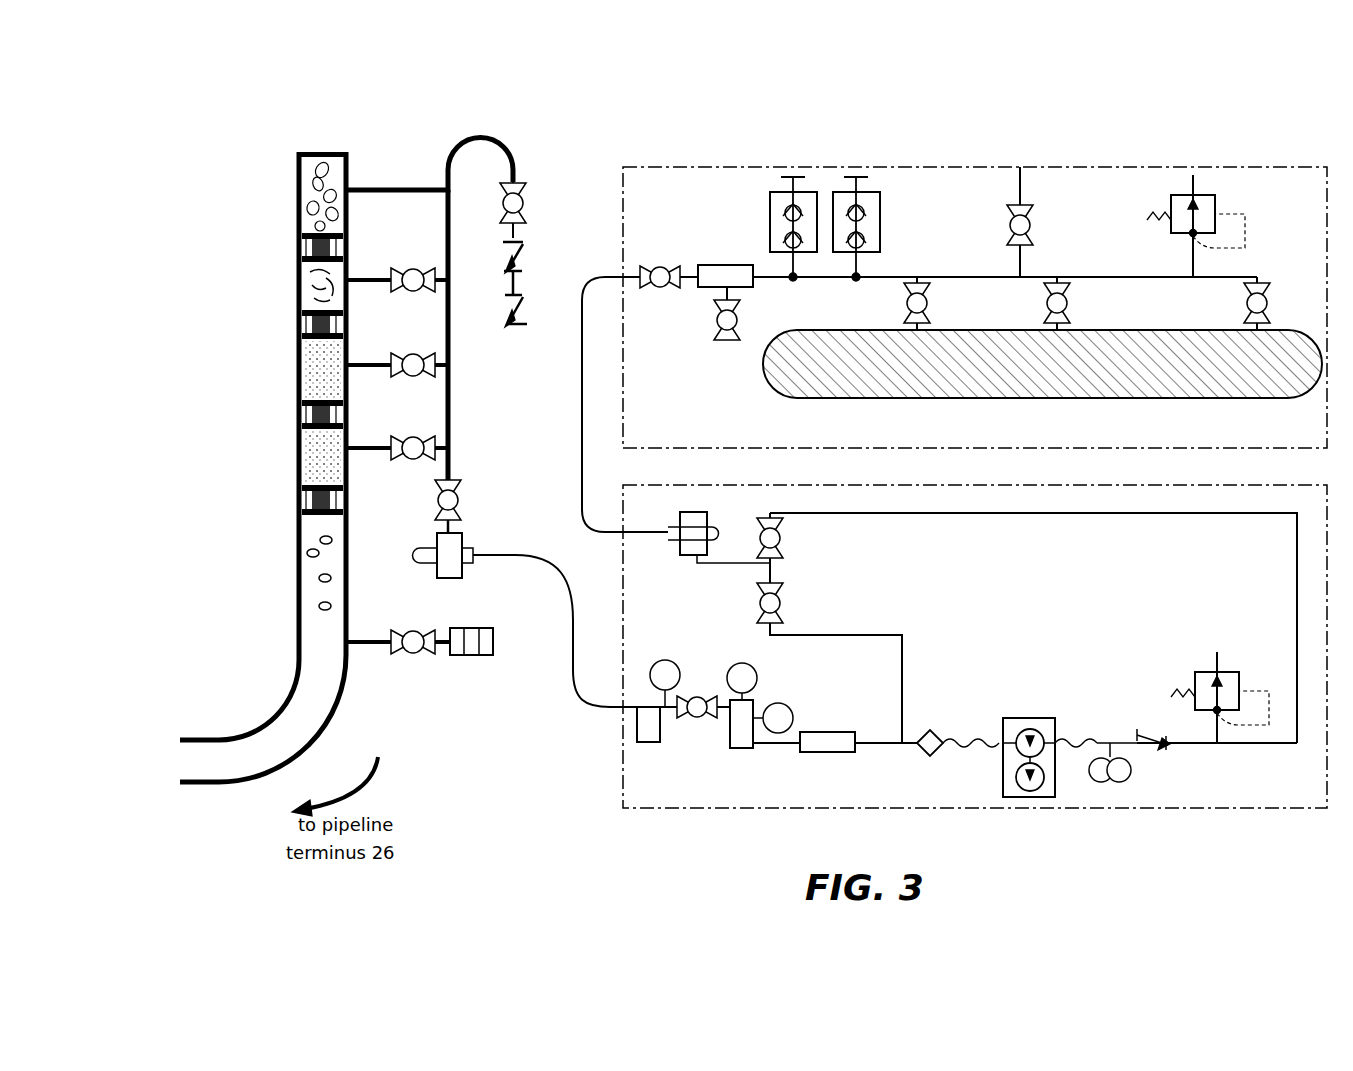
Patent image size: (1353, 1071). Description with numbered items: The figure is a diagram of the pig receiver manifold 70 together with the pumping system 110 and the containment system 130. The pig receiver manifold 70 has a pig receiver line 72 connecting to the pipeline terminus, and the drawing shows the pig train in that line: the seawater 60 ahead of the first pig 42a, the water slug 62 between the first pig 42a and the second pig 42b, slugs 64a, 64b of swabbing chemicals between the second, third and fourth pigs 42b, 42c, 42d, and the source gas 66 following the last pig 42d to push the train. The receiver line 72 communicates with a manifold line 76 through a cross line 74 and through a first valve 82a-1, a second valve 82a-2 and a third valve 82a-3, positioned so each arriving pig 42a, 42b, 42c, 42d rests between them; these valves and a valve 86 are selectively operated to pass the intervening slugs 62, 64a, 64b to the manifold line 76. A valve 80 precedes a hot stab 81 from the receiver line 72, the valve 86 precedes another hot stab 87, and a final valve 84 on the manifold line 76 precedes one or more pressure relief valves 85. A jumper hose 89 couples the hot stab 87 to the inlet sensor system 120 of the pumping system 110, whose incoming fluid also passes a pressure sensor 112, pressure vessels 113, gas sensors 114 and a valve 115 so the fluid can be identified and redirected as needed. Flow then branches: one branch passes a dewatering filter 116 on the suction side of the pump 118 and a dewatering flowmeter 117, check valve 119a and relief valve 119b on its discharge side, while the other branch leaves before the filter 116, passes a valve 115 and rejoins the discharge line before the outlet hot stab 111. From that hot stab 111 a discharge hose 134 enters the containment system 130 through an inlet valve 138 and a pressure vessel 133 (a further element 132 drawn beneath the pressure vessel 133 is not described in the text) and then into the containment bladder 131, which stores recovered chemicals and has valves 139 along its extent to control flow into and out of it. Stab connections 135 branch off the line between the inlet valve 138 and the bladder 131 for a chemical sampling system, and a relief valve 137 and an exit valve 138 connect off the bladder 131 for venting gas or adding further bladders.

The pig receiver manifold 70 is at (306, 120).
The pig receiver line 72 is at (297, 158).
The seawater 60 is at (296, 188).
The water slug 62 is at (296, 288).
The slug of swabbing chemicals 64a is at (296, 368).
The slug of swabbing chemicals 64b is at (296, 457).
The source gas 66 is at (307, 581).
The first pig 42a is at (296, 258).
The second pig 42b is at (296, 338).
The third pig 42c is at (296, 428).
The fourth pig 42d is at (296, 517).
The cross line 74 is at (416, 190).
The manifold line 76 is at (452, 410).
The valve 80 is at (413, 655).
The hot stab 81 is at (470, 660).
The first valve 82a-1 is at (416, 268).
The second valve 82a-2 is at (416, 353).
The third valve 82a-3 is at (416, 436).
The final valve 84 is at (522, 192).
The pressure relief valves 85 is at (527, 302).
The valve 86 is at (462, 500).
The hot stab 87 is at (462, 550).
The jumper hose 89 is at (575, 680).
The pumping system 110 is at (718, 825).
The hot stab 111 is at (685, 548).
The pressure sensor 112 is at (660, 660).
The pressure vessels 113 is at (745, 750).
The gas sensors 114 is at (772, 700).
The valve 115 is at (788, 600).
The dewatering filter 116 is at (935, 735).
The dewatering flowmeter 117 is at (1125, 782).
The pump 118 is at (1060, 718).
The check valve 119a is at (1165, 750).
The relief valve 119b is at (1197, 668).
The inlet sensor system 120 is at (637, 735).
The containment system 130 is at (1003, 130).
The containment bladder 131 is at (1007, 330).
The drain valve 132 is at (727, 342).
The pressure vessel 133 is at (716, 265).
The discharge hose 134 is at (580, 375).
The stab connections 135 is at (833, 190).
The relief valve 137 is at (1165, 210).
The inlet valve 138 is at (662, 266).
The valves 139 is at (905, 303).